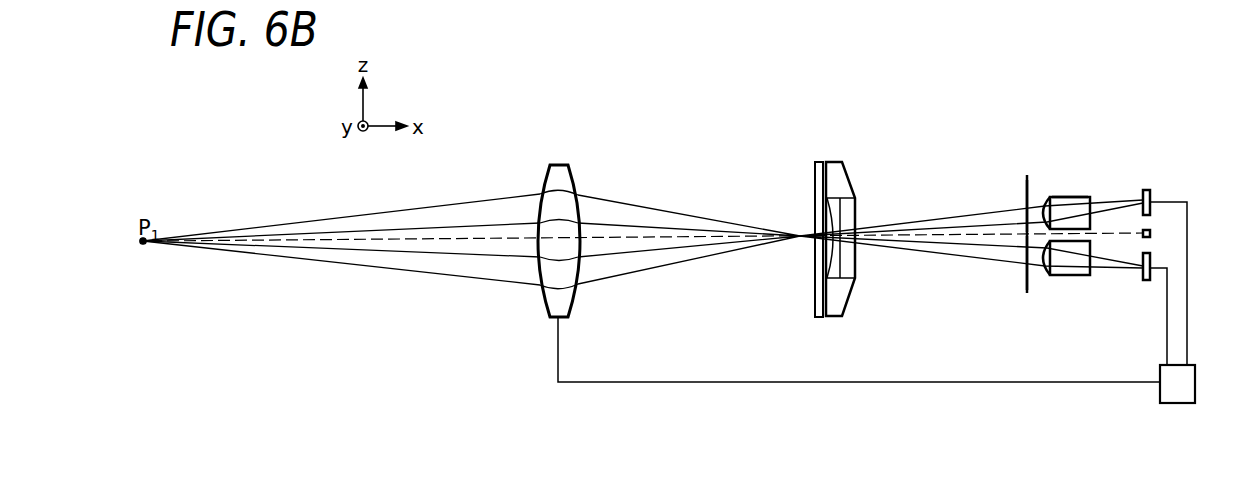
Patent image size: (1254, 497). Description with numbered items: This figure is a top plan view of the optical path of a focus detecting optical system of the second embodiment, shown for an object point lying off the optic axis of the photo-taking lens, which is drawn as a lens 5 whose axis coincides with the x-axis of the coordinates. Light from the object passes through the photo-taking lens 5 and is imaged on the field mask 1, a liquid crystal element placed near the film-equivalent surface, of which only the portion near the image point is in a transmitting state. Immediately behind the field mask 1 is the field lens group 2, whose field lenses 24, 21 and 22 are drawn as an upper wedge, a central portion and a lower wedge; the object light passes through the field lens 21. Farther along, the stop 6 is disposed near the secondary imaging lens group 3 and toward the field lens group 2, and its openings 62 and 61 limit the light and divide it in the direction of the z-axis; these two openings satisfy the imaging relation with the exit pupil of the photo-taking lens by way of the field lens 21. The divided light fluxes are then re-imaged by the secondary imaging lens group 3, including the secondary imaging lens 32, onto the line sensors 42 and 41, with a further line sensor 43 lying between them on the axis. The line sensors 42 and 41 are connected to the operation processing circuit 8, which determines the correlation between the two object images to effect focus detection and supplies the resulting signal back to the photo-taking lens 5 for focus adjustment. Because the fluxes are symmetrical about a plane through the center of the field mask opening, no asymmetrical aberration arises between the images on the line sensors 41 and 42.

The objective lens 5 is at (558, 163).
The field mask 1 is at (818, 162).
The field lens group 2 is at (866, 223).
The field lens 24 is at (838, 178).
The field lens 21 is at (848, 253).
The field lens 22 is at (842, 292).
The stop 6 is at (1001, 210).
The stop opening 62 is at (1027, 217).
The stop opening 61 is at (1025, 252).
The secondary imaging lens group 3 is at (1086, 231).
The secondary imaging lens 32 is at (1080, 196).
The line sensor 42 is at (1151, 193).
The line sensor 43 is at (1153, 232).
The line sensor 41 is at (1153, 263).
The operation processing circuit 8 is at (1196, 382).